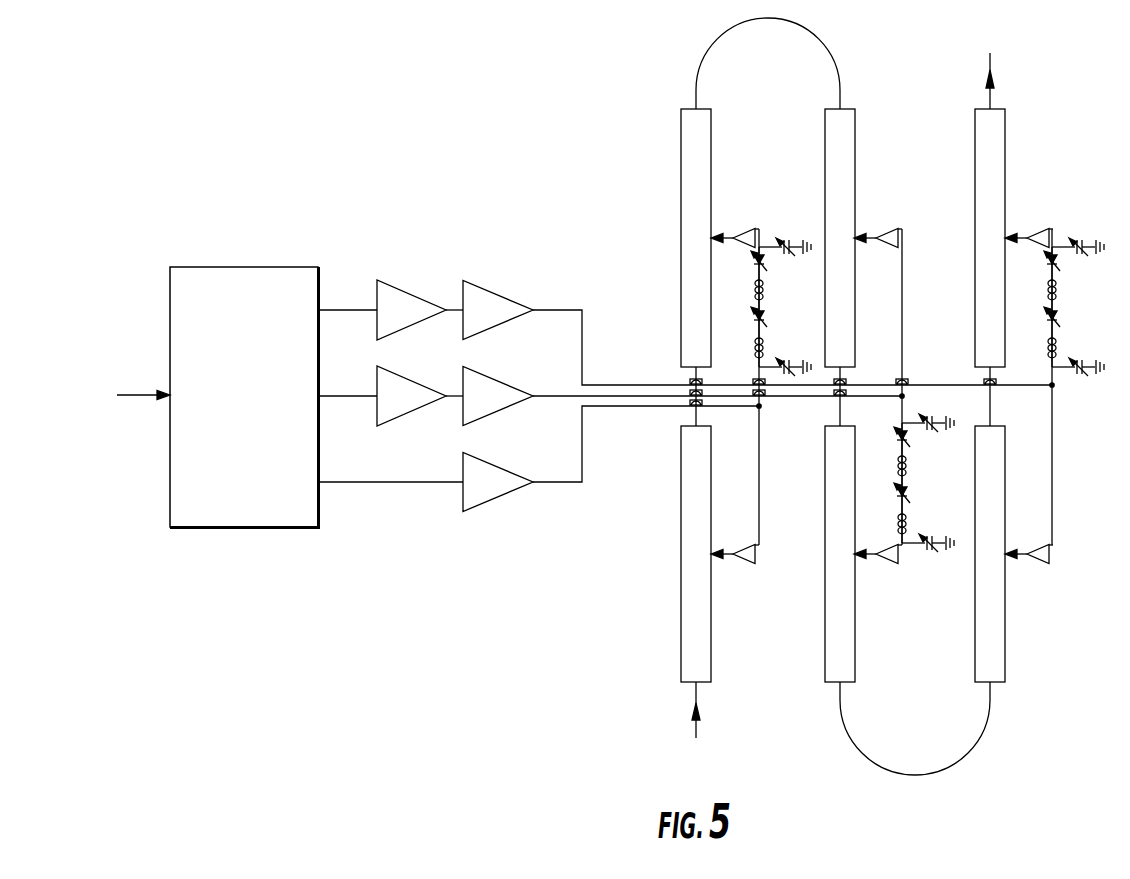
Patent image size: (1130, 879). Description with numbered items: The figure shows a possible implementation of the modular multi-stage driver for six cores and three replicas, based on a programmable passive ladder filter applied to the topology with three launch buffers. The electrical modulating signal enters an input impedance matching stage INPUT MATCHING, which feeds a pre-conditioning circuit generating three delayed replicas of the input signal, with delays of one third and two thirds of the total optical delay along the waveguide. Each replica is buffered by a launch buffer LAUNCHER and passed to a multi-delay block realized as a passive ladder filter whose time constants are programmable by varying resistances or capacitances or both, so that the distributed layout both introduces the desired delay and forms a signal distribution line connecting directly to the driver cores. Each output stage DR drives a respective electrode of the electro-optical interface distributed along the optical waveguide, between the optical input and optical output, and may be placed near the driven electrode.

The input impedance matching stage INPUT MATCHING is at (245, 397).
The launch buffer LAUNCHER is at (685, 412).
The driver core DR is at (907, 397).